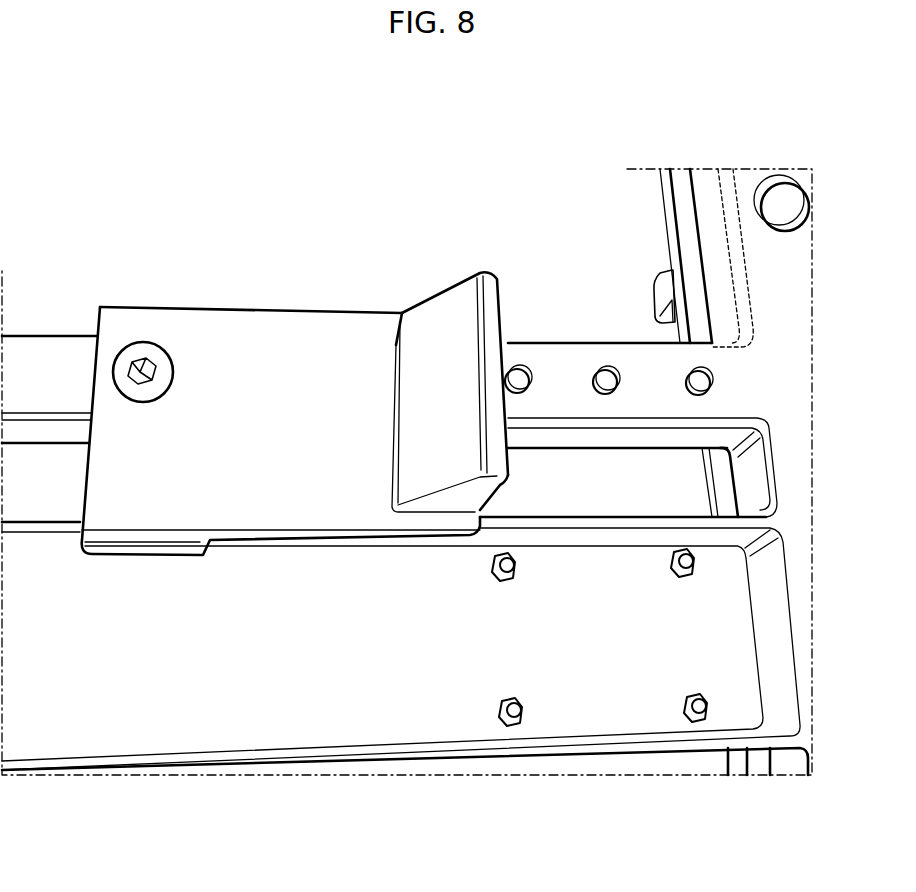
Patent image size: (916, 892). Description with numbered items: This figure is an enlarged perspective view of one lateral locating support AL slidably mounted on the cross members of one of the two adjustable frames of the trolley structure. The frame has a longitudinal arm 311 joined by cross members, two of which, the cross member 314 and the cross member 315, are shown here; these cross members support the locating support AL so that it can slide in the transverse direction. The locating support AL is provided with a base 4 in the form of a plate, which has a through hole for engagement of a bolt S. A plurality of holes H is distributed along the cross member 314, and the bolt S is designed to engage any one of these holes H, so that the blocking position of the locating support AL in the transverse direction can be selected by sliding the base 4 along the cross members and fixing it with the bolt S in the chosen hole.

The base 4 is at (265, 363).
The bolt S is at (141, 357).
The locating support AL is at (412, 303).
The cross member 314 is at (558, 338).
The longitudinal arm 311 is at (783, 290).
The holes H is at (693, 388).
The cross member 315 is at (230, 720).